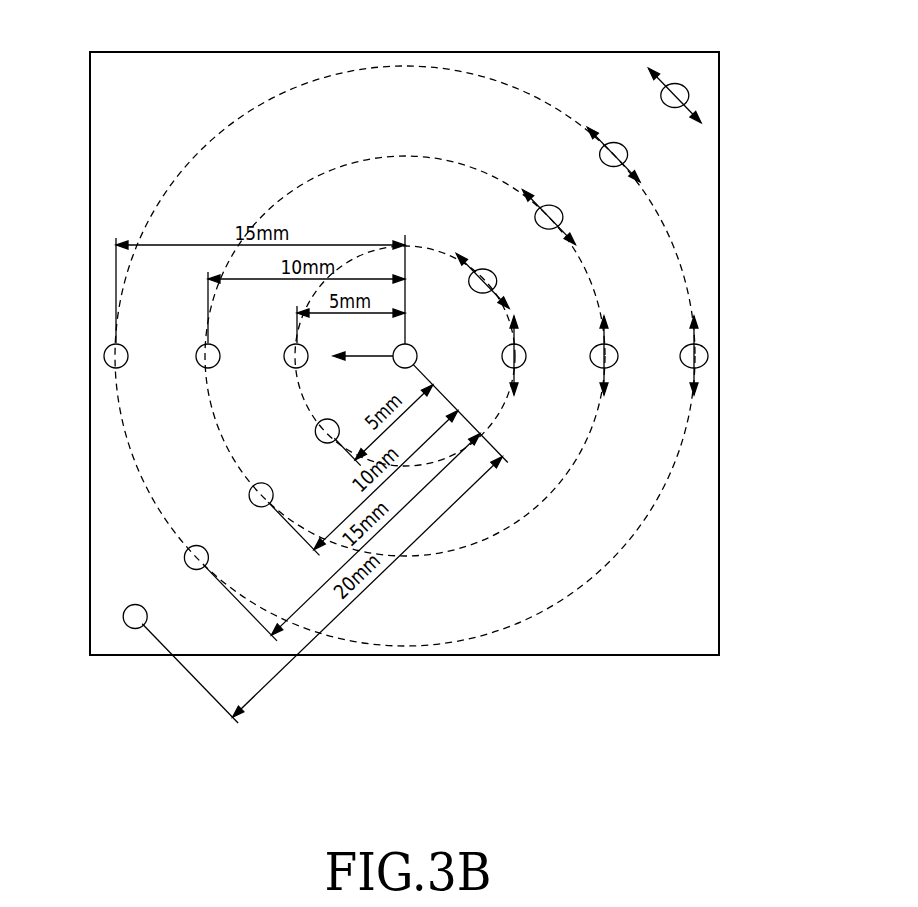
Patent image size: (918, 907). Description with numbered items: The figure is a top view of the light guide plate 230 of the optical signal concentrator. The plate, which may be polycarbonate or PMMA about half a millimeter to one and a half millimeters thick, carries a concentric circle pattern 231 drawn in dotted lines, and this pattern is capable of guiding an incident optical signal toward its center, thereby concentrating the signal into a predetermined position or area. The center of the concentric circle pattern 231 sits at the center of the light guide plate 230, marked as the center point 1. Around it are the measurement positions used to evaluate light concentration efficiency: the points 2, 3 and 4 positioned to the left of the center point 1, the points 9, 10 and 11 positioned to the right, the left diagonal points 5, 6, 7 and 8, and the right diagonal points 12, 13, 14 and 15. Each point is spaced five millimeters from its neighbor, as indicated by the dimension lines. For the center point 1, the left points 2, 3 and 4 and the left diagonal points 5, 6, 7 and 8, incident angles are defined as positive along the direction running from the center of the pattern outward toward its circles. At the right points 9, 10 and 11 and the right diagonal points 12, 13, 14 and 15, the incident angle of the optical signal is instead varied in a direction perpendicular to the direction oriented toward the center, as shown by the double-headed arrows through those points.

The light guide plate 230 is at (402, 52).
The concentric circle pattern 231 is at (668, 233).
The center point 1 is at (405, 356).
The left point 2 is at (296, 356).
The left point 3 is at (208, 356).
The left point 4 is at (116, 356).
The left diagonal point 5 is at (327, 431).
The left diagonal point 6 is at (261, 495).
The left diagonal point 7 is at (196, 558).
The left diagonal point 8 is at (135, 617).
The right point 9 is at (514, 356).
The right point 10 is at (604, 356).
The right point 11 is at (694, 356).
The right diagonal point 12 is at (483, 281).
The right diagonal point 13 is at (549, 217).
The right diagonal point 14 is at (614, 155).
The right diagonal point 15 is at (675, 96).